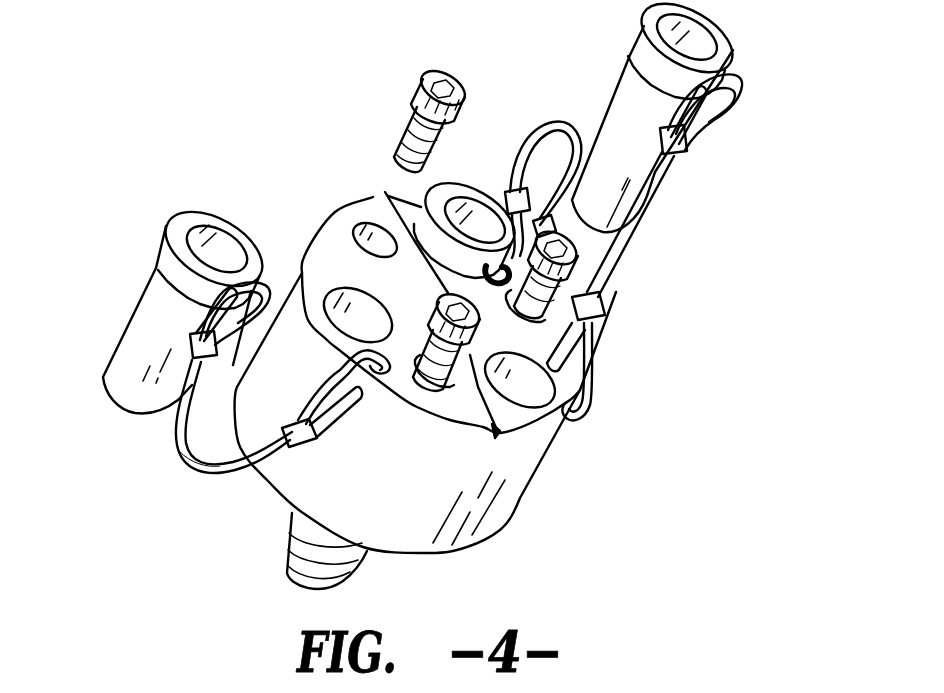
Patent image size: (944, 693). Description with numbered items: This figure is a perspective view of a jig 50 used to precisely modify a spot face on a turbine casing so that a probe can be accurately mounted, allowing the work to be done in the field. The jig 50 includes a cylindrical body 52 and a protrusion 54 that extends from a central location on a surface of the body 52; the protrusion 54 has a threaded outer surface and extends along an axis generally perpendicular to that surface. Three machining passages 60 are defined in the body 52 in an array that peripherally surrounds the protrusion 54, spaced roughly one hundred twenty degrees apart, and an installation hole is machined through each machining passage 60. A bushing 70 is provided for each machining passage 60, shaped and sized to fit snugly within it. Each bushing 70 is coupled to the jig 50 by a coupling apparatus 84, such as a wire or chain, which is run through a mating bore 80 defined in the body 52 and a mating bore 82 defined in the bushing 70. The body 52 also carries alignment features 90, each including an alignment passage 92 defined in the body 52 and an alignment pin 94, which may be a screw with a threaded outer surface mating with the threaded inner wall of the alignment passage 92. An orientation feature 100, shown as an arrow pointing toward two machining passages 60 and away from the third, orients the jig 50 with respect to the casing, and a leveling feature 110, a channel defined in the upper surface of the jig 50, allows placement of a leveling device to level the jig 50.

The jig 50 is at (303, 101).
The body 52 is at (506, 500).
The protrusion 54 is at (287, 534).
The machining passage 60 is at (359, 311).
The bushing 70 is at (134, 298).
The mating bore 80 is at (393, 371).
The mating bore 82 is at (708, 99).
The coupling apparatus 84 is at (186, 453).
The alignment feature 90 is at (381, 206).
The alignment passage 92 is at (377, 236).
The alignment pin 94 is at (412, 127).
The orientation feature 100 is at (597, 325).
The leveling feature 110 is at (500, 436).